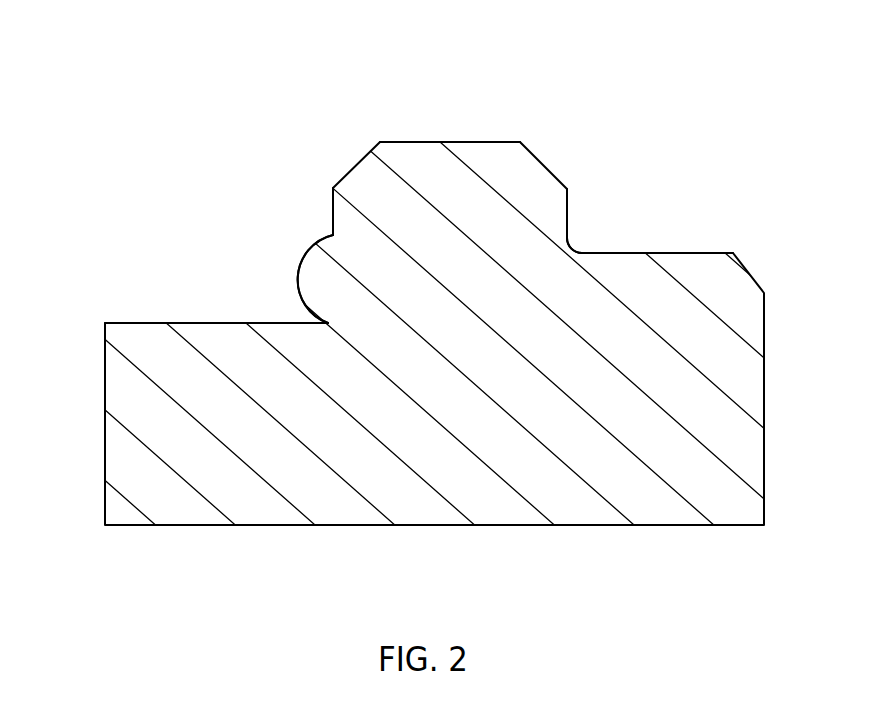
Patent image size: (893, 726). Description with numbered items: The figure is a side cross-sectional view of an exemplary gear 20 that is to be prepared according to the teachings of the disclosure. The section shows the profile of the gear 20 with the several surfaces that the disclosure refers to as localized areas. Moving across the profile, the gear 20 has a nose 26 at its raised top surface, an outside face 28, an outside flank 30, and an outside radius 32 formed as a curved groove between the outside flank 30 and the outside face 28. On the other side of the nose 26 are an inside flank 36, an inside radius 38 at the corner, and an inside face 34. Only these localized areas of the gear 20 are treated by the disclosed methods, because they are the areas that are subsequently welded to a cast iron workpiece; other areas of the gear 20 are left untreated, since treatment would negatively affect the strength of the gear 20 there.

The gear 20 is at (118, 57).
The nose 26 is at (460, 141).
The outside face 28 is at (160, 322).
The outside flank 30 is at (333, 218).
The outside radius 32 is at (352, 303).
The inside face 34 is at (702, 252).
The inside flank 36 is at (568, 207).
The inside radius 38 is at (575, 245).